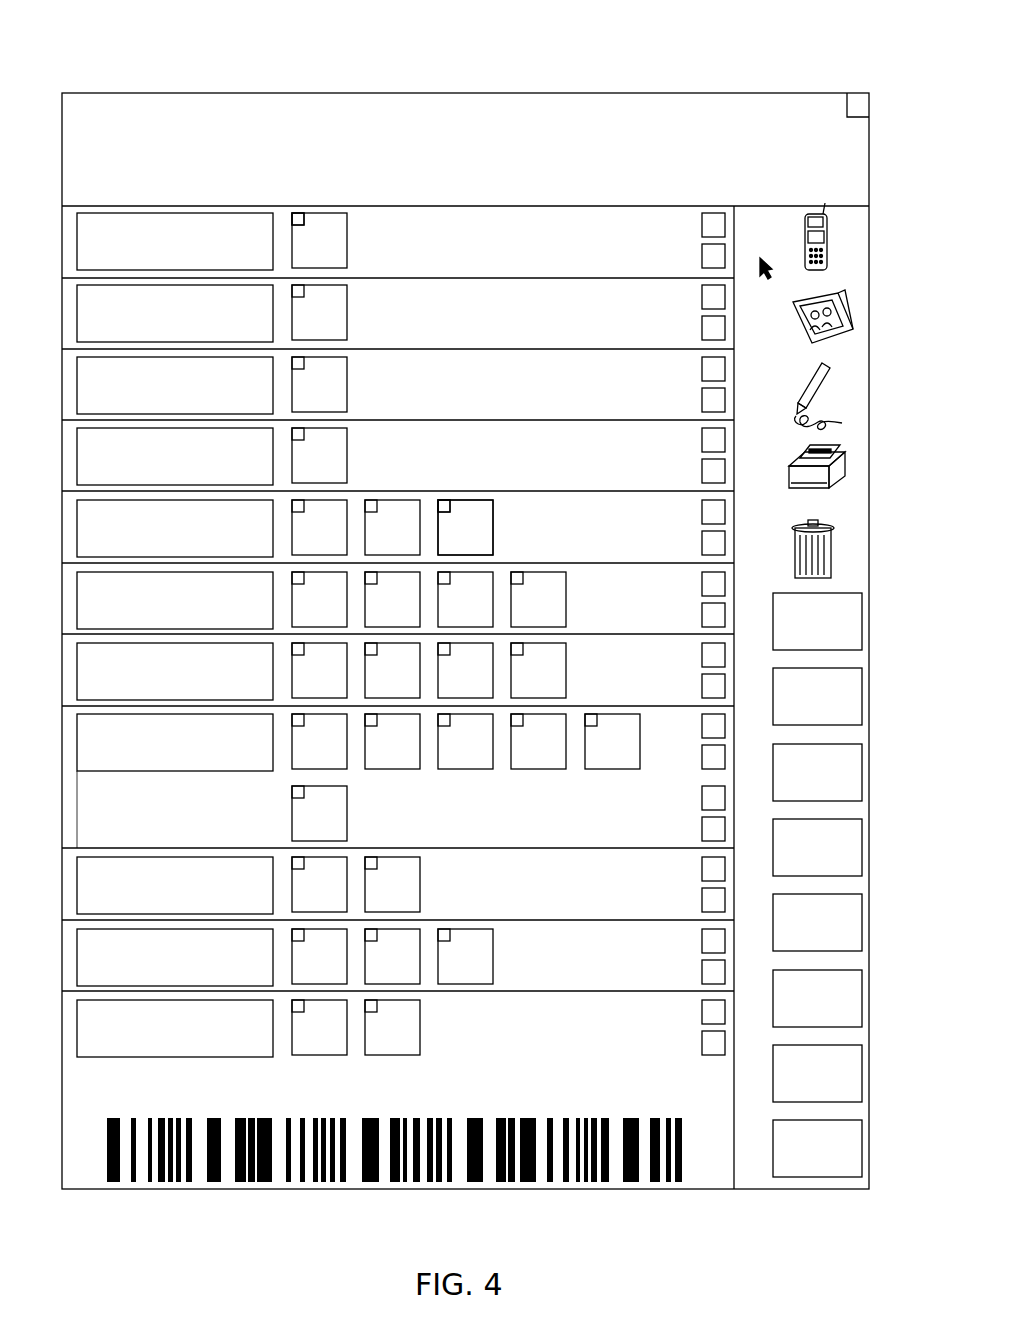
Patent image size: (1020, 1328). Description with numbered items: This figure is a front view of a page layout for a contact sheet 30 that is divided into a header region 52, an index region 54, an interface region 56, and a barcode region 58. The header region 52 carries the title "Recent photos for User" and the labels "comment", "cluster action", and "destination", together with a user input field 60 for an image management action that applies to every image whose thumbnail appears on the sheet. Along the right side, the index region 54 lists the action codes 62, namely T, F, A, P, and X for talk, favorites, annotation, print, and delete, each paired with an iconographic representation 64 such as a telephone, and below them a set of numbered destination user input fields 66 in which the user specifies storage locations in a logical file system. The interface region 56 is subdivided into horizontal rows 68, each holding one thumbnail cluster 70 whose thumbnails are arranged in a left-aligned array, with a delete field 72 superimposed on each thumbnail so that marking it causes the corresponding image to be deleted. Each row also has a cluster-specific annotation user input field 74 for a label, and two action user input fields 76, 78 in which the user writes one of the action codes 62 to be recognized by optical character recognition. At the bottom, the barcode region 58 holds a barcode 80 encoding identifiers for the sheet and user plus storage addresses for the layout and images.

The contact sheet 30 is at (128, 26).
The header region 52 is at (465, 169).
The index region 54 is at (862, 366).
The interface region 56 is at (70, 444).
The barcode region 58 is at (394, 1131).
The user input field 60 is at (858, 95).
The action codes 62 is at (781, 276).
The iconographic representation 64 is at (842, 243).
The destination user input fields 66 is at (830, 633).
The rows 68 is at (488, 249).
The thumbnail cluster 70 is at (522, 523).
The delete field 72 is at (298, 213).
The annotation user input field 74 is at (187, 252).
The action user input field 76 is at (712, 228).
The action user input field 78 is at (712, 259).
The barcode 80 is at (214, 1117).